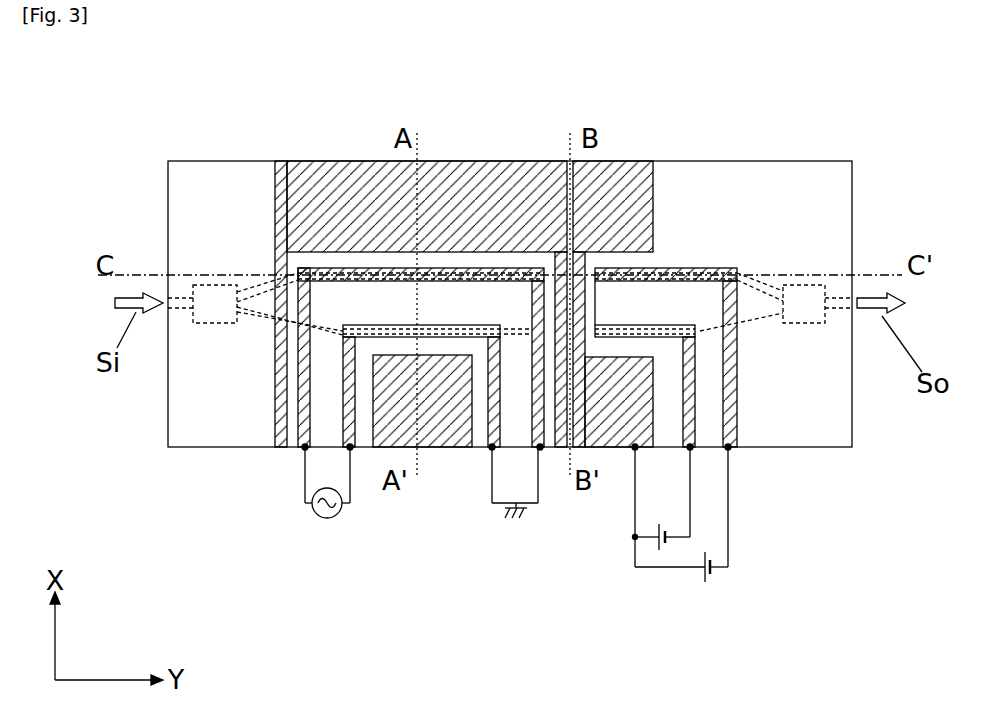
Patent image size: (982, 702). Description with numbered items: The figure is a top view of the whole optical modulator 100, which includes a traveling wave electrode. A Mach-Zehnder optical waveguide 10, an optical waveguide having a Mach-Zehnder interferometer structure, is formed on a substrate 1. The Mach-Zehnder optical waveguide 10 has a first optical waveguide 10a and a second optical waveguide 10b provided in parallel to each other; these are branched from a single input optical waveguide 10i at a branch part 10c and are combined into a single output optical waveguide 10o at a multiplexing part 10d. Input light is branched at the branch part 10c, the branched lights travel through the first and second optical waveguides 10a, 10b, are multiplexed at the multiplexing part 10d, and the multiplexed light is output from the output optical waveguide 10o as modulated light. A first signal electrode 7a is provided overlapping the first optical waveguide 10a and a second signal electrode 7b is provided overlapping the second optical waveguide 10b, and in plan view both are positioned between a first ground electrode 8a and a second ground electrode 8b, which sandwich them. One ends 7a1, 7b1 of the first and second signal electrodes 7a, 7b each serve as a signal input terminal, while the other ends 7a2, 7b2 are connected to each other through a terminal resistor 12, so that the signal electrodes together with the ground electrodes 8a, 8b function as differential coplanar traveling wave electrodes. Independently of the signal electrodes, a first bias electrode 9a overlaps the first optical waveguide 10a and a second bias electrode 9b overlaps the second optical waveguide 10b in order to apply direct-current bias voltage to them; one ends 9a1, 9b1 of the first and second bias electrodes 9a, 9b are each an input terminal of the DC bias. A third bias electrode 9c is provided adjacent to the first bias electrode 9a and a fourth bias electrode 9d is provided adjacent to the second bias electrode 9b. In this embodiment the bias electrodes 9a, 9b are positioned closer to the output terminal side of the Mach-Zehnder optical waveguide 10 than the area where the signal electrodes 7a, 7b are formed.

The optical modulator 100 is at (128, 106).
The substrate 1 is at (195, 161).
The first signal electrode 7a is at (421, 352).
The one end of the first signal electrode 7a1 is at (354, 450).
The other end of the first signal electrode 7a2 is at (492, 450).
The second signal electrode 7b is at (380, 268).
The one end of the second signal electrode 7b1 is at (301, 450).
The other end of the second signal electrode 7b2 is at (541, 450).
The first ground electrode 8a is at (443, 450).
The second ground electrode 8b is at (548, 186).
The first bias electrode 9a is at (722, 349).
The one end of the first bias electrode 9a1 is at (692, 450).
The second bias electrode 9b is at (703, 325).
The one end of the second bias electrode 9b1 is at (732, 450).
The third bias electrode 9c is at (626, 450).
The fourth bias electrode 9d is at (637, 162).
The Mach-Zehnder optical waveguide 10 is at (515, 301).
The first optical waveguide 10a is at (256, 318).
The second optical waveguide 10b is at (258, 290).
The branch part 10c is at (213, 323).
The multiplexing part 10d is at (800, 327).
The input optical waveguide 10i is at (188, 308).
The output optical waveguide 10o is at (833, 308).
The terminal resistor 12 is at (516, 520).